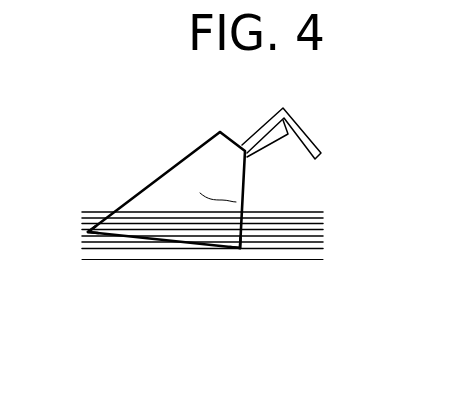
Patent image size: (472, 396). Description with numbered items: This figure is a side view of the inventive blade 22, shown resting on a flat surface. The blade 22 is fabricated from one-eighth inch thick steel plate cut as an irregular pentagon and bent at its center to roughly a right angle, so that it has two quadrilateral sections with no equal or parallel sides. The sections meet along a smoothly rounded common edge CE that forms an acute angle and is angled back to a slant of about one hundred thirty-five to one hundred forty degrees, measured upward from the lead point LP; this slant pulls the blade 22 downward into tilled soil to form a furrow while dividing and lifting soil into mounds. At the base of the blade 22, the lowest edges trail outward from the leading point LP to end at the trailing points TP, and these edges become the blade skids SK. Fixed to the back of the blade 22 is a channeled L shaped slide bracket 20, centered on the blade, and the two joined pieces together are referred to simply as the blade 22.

The channeled L shaped slide bracket 20 is at (270, 120).
The blade 22 is at (245, 183).
The common edge CE is at (163, 175).
The lead point LP is at (88, 232).
The blade skids SK is at (140, 238).
The trailing points TP is at (241, 250).